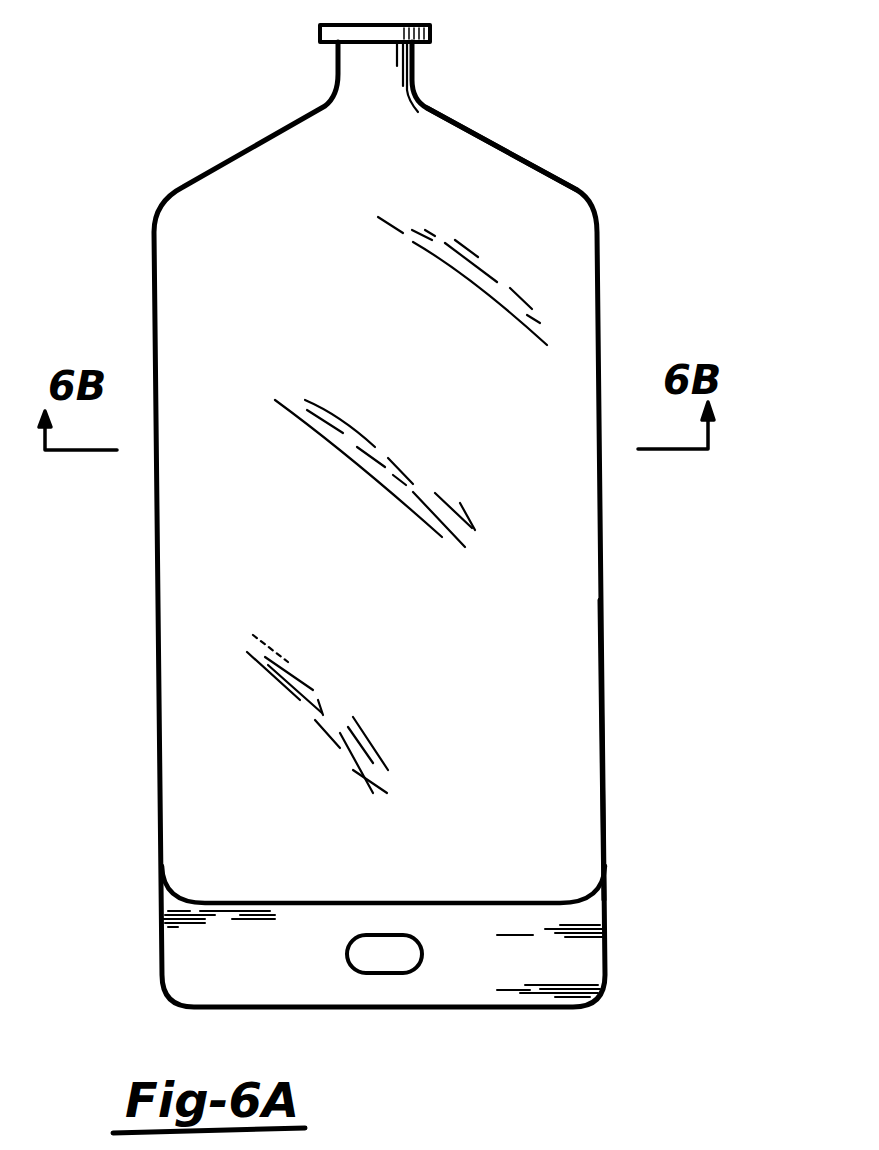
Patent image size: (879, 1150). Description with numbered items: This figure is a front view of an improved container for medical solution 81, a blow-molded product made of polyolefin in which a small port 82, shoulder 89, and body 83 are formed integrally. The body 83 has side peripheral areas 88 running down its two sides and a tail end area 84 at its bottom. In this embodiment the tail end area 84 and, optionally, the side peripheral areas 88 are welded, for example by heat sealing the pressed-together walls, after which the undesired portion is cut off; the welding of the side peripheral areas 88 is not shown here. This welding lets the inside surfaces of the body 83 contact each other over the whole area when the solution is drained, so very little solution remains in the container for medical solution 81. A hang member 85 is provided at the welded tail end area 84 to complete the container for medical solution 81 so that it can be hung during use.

The container for medical solution 81 is at (472, 541).
The cap / closure 82 is at (415, 62).
The container body 83 is at (557, 603).
The tail end area 84 is at (575, 953).
The hang member 85 is at (422, 958).
The side peripheral areas 88 is at (605, 745).
The shoulder 89 is at (527, 160).